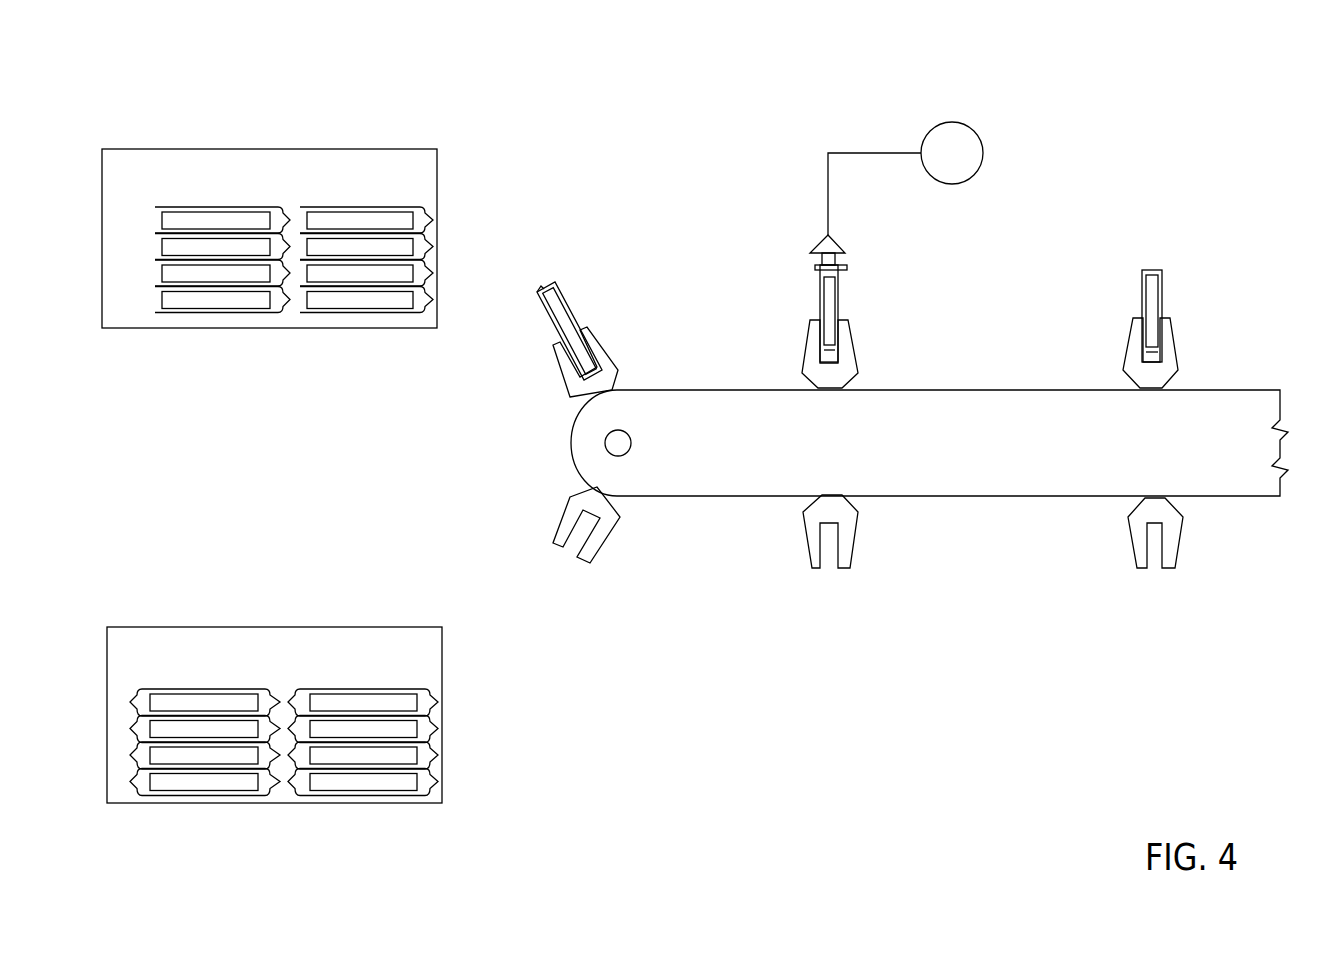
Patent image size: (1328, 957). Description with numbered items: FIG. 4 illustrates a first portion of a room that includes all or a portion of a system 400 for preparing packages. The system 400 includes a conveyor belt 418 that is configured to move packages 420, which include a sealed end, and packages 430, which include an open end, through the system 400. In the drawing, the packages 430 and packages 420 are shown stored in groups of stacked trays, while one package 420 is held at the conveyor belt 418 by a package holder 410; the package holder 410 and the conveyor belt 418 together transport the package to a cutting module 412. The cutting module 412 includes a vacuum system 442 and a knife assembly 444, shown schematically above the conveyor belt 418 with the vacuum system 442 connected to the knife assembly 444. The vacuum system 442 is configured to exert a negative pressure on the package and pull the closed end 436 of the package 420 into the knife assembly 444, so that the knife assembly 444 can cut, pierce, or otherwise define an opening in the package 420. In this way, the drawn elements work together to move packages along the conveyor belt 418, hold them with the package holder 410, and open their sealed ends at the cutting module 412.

The system 400 is at (238, 88).
The package 430 is at (385, 163).
The package 420 is at (393, 637).
The closed end 436 is at (548, 290).
The conveyor belt 418 is at (1222, 397).
The package holder 410 is at (610, 540).
The cutting module 412 is at (810, 167).
The vacuum system 442 is at (965, 124).
The knife assembly 444 is at (848, 264).